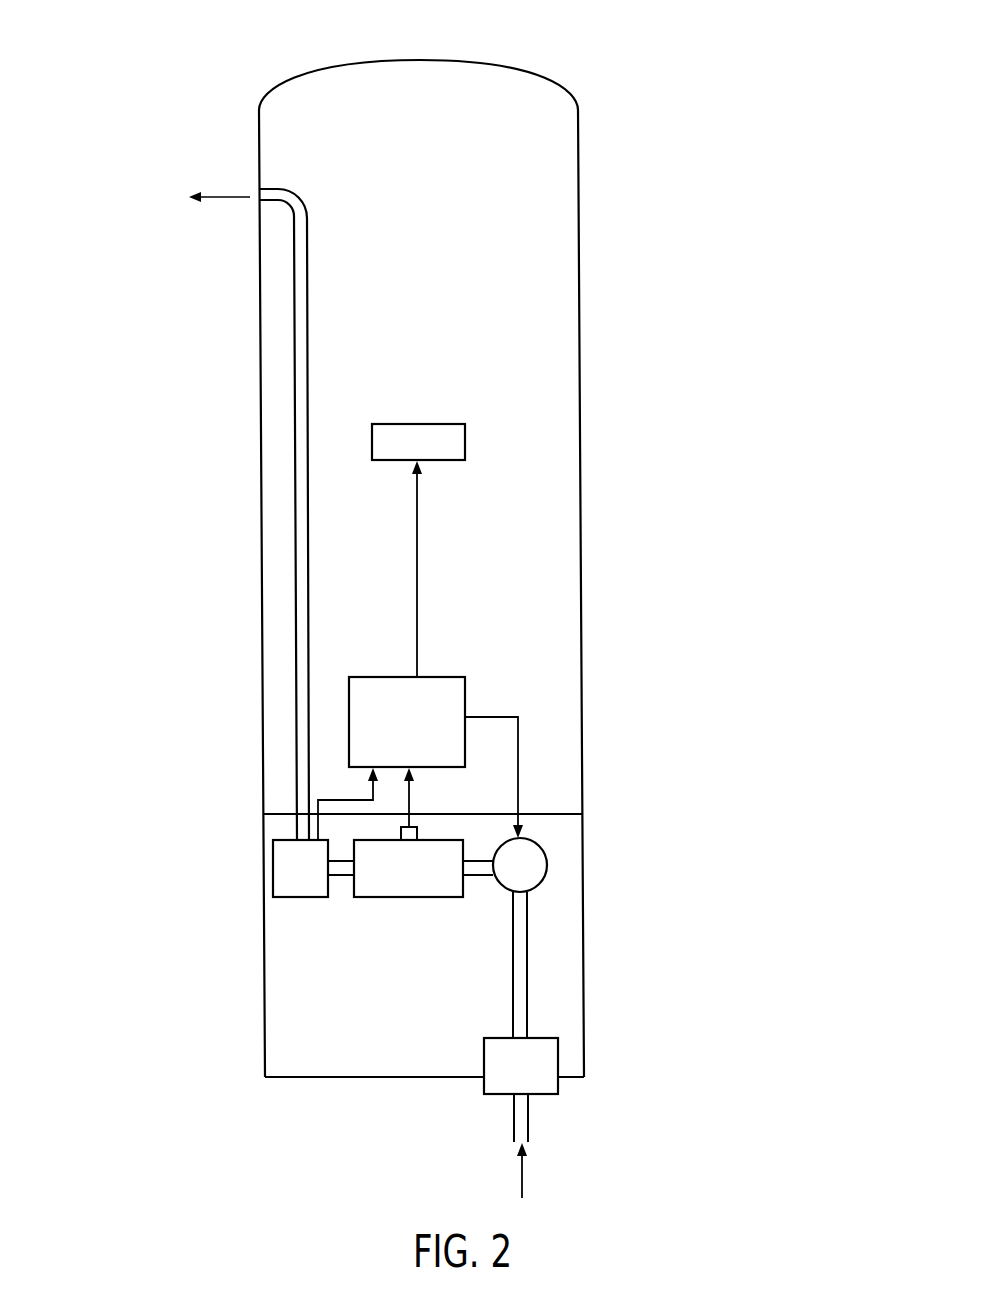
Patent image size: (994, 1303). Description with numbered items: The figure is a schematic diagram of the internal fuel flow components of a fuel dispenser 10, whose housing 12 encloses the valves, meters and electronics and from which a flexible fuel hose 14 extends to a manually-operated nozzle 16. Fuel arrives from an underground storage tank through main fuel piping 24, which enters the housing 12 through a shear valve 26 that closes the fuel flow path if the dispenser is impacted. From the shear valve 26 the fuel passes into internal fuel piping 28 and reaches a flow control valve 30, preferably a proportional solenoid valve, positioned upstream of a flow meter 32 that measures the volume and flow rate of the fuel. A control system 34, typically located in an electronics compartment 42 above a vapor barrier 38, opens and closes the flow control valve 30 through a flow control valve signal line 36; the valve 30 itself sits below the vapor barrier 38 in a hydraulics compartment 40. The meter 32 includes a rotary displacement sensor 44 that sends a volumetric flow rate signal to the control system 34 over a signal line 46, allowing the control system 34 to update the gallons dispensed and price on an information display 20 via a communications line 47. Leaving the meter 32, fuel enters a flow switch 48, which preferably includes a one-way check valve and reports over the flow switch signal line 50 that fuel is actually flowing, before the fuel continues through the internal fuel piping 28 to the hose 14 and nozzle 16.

The fuel dispenser 10 is at (592, 53).
The housing 12 is at (488, 63).
The fuel hose 14 is at (168, 187).
The nozzle 16 is at (118, 208).
The information display 20 is at (416, 423).
The main fuel piping 24 is at (528, 1120).
The shear valve 26 is at (543, 1037).
The internal fuel piping 28 is at (295, 541).
The flow control valve 30 is at (548, 865).
The flow meter 32 is at (410, 898).
The control system 34 is at (440, 676).
The flow control valve signal line 36 is at (491, 713).
The vapor barrier 38 is at (548, 812).
The hydraulics compartment 40 is at (280, 975).
The electronics compartment 42 is at (560, 546).
The rotary displacement sensor 44 is at (417, 833).
The signal line 46 is at (410, 794).
The communications line 47 is at (418, 555).
The flow switch 48 is at (273, 870).
The flow switch signal line 50 is at (342, 797).